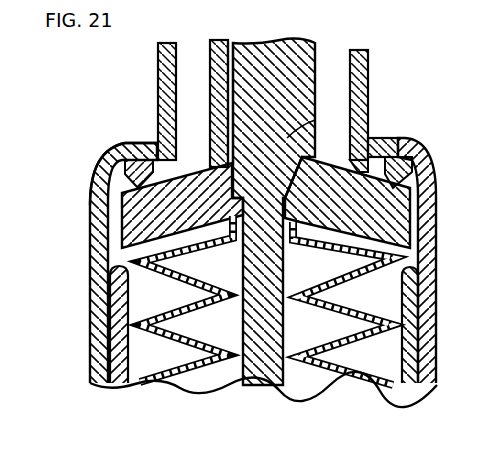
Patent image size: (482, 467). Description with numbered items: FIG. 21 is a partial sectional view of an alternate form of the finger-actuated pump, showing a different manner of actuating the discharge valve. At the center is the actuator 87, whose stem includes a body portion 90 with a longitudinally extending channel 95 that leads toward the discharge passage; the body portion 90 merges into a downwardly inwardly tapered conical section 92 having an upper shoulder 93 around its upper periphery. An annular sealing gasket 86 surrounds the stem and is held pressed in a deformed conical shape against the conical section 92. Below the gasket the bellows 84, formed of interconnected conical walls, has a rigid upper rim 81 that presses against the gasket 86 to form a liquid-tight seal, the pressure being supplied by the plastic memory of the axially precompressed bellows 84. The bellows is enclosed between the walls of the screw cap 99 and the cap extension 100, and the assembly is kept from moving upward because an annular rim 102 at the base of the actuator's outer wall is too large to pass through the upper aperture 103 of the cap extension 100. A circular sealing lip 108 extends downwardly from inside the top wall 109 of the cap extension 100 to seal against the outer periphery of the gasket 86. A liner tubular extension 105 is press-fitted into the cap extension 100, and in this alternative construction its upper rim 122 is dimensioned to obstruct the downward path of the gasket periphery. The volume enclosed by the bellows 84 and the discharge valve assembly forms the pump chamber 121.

The body portion 90 is at (290, 54).
The channel 95 is at (230, 56).
The upper aperture 103 is at (162, 128).
The actuator 87 is at (360, 88).
The conical section 92 is at (287, 135).
The upper shoulder 93 is at (306, 158).
The cap extension 100 is at (100, 278).
The screw cap 99 is at (110, 150).
The circular sealing lip 108 is at (140, 168).
The top wall 109 is at (383, 140).
The annular rim 102 is at (124, 202).
The sealing gasket 86 is at (397, 226).
The upper rim 122 is at (108, 249).
The tubular extension 105 is at (118, 312).
The upper rim 81 is at (293, 226).
The bellows 84 is at (370, 284).
The pump chamber 121 is at (324, 272).